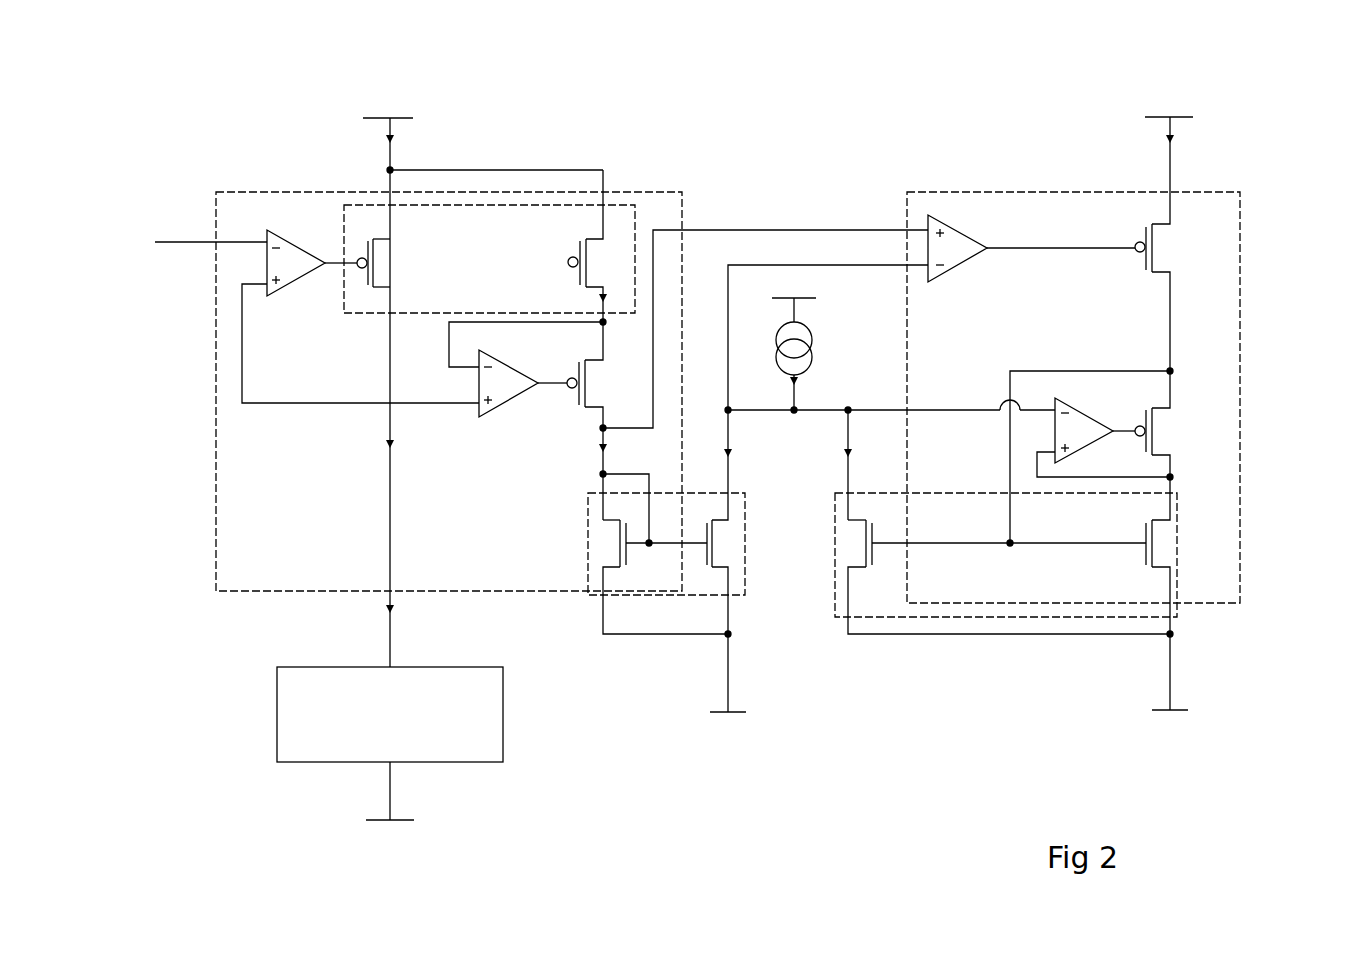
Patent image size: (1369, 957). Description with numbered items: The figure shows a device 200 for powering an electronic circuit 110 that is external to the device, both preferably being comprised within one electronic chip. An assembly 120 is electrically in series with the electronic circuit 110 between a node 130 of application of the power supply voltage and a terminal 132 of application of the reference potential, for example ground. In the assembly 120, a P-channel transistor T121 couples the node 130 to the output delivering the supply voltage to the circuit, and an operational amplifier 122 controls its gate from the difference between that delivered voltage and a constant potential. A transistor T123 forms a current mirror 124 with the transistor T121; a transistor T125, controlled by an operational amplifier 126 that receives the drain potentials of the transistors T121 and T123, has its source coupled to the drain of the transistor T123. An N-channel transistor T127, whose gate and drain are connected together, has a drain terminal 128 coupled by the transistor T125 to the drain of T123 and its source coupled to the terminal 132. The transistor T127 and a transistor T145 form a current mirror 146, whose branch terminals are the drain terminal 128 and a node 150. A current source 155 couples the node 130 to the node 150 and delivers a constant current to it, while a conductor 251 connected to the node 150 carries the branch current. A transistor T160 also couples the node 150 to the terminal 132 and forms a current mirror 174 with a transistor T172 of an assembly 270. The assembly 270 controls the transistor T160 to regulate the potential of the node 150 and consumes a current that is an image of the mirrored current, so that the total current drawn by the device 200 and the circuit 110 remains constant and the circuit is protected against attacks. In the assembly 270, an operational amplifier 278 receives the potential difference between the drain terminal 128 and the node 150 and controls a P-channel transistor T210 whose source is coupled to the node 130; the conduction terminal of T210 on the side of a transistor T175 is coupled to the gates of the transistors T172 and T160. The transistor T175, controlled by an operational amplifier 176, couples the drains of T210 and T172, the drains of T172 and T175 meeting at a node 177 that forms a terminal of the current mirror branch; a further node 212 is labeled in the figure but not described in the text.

The device 200 is at (222, 128).
The electronic circuit 110 is at (490, 743).
The assembly 120 is at (622, 192).
The operational amplifier 122 is at (300, 265).
The current mirror 124 is at (558, 205).
The operational amplifier 126 is at (503, 393).
The drain terminal 128 is at (598, 467).
The terminal or node of application of power supply voltage VCC 130 is at (388, 128).
The terminal or node of application of reference potential GND 132 is at (387, 795).
The current mirror 146 is at (652, 597).
The node 150 is at (822, 410).
The current source 155 is at (778, 343).
The current mirror 174 is at (968, 617).
The operational amplifier 176 is at (1085, 425).
The node 177 is at (1175, 480).
The node 212 is at (1173, 373).
The conductor 251 is at (731, 432).
The assembly 270 is at (1050, 192).
The operational amplifier 278 is at (962, 237).
The transistor T121 is at (383, 252).
The transistor T123 is at (596, 258).
The transistor T125 is at (566, 416).
The transistor T127 is at (606, 548).
The transistor T145 is at (725, 546).
The transistor T160 is at (848, 548).
The transistor T172 is at (1162, 548).
The transistor T175 is at (1164, 434).
The transistor T210 is at (1174, 251).